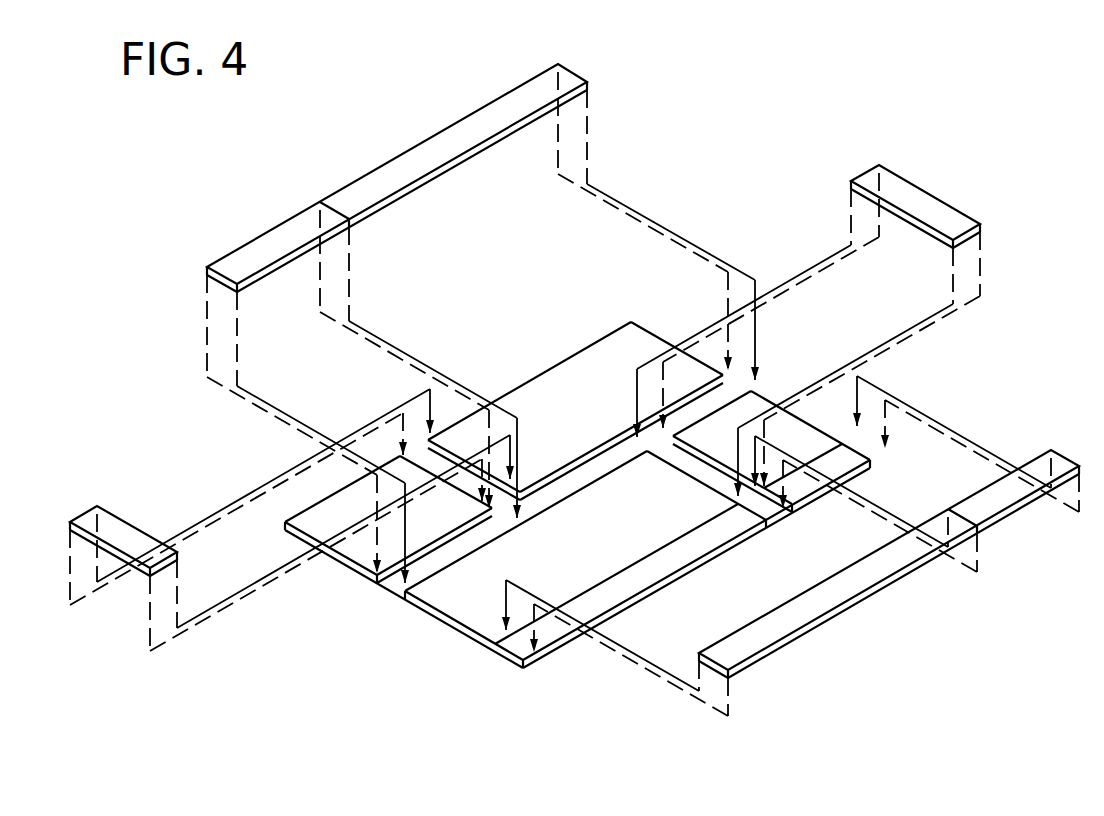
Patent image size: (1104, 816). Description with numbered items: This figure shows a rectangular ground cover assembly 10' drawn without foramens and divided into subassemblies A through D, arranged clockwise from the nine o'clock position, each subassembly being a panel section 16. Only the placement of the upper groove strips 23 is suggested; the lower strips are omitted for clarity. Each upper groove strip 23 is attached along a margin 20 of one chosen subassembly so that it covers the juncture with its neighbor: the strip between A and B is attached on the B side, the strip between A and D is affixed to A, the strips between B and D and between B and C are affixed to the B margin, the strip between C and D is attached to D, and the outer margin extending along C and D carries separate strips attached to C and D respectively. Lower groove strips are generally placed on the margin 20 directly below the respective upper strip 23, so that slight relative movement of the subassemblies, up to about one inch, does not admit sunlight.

The rectangular ground cover assembly 10' is at (577, 482).
The panel section 16 is at (584, 564).
The margin 20 is at (457, 548).
The upper groove strip 23 is at (970, 503).